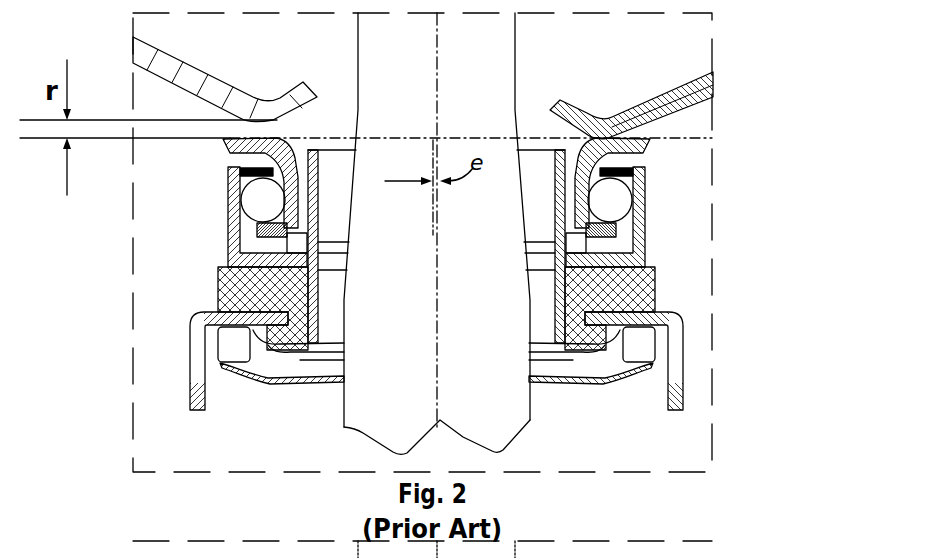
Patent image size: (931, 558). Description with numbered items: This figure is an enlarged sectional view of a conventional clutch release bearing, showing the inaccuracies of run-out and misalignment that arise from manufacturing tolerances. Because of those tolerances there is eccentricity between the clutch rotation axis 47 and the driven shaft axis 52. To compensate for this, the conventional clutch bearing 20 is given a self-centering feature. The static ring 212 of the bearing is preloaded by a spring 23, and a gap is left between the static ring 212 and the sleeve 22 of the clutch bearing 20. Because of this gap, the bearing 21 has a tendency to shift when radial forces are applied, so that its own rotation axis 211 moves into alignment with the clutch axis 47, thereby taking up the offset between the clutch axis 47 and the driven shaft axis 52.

The conventional clutch bearing 20 is at (203, 274).
The conventional bearing 21 is at (692, 183).
The conventional sleeve 22 is at (700, 375).
The spring of conventional clutch bearing 23 is at (336, 228).
The rotation axis of clutch 47 is at (437, 220).
The rotation axis of driven shaft 52 is at (437, 411).
The rotation axis of conventional bearing 211 is at (476, 220).
The static ring of conventional bearing 212 is at (172, 217).